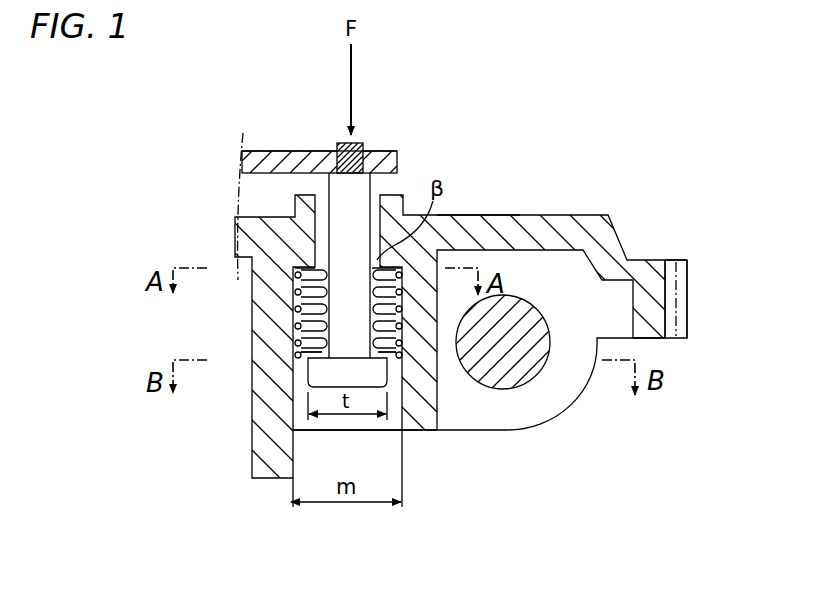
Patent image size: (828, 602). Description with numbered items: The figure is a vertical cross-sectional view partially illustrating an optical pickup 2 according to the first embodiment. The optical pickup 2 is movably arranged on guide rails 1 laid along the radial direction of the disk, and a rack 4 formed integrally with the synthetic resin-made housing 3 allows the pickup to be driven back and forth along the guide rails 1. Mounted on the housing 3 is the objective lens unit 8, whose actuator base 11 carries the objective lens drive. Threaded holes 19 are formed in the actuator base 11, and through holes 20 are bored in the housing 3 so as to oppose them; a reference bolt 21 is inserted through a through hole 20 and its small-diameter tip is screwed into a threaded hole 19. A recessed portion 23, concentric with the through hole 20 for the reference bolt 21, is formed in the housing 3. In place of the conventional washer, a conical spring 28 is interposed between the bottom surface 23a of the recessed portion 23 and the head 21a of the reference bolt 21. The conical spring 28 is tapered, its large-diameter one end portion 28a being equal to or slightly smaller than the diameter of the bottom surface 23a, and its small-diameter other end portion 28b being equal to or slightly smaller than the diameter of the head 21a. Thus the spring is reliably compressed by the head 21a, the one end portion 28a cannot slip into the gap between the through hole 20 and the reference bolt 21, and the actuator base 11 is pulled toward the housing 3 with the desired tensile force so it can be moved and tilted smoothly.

The guide rails 1 is at (520, 360).
The optical pickup 2 is at (560, 180).
The housing 3 is at (265, 452).
The rack 4 is at (668, 268).
The objective lens unit 8 is at (237, 152).
The actuator base 11 is at (393, 151).
The threaded holes 19 is at (330, 151).
The through holes 20 is at (377, 197).
The reference bolt 21 is at (358, 145).
The head of the reference bolt 21a is at (380, 372).
The recessed portion 23 is at (298, 425).
The bottom surface of the recessed portion 23a is at (453, 217).
The conical spring 28 is at (292, 312).
The one end portion of the conical spring 28a is at (310, 264).
The other end portion of the conical spring 28b is at (312, 343).